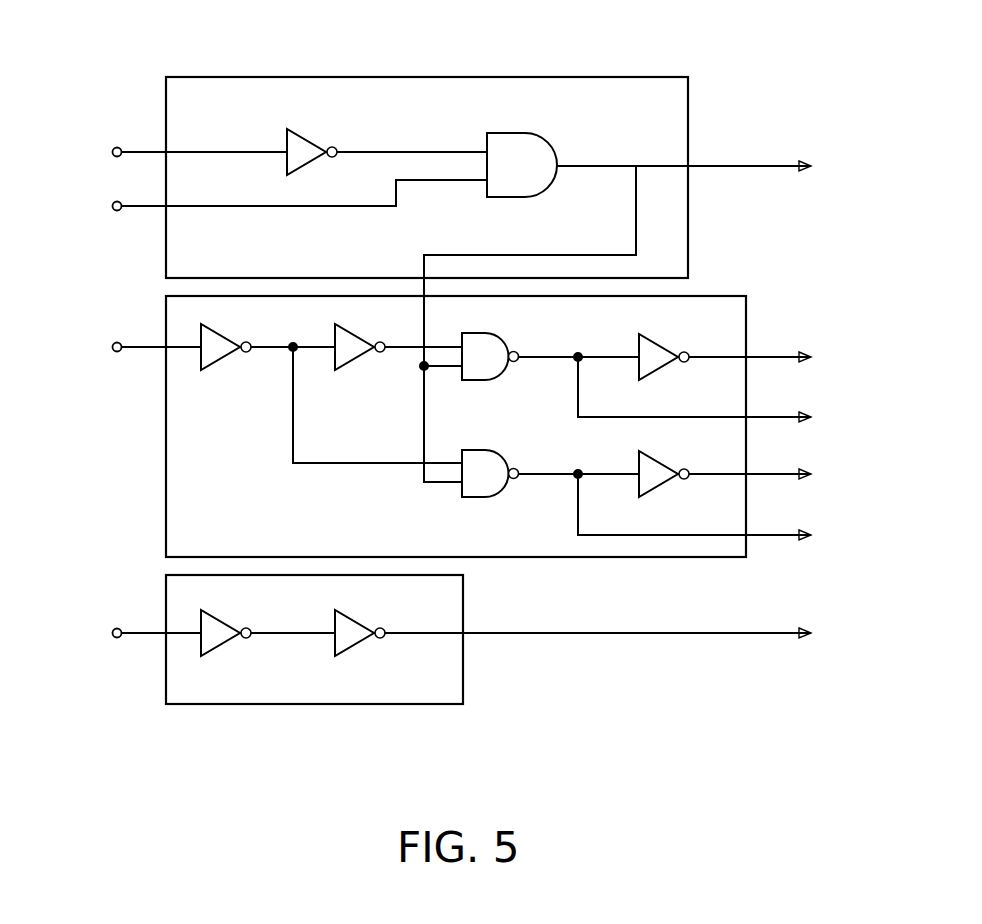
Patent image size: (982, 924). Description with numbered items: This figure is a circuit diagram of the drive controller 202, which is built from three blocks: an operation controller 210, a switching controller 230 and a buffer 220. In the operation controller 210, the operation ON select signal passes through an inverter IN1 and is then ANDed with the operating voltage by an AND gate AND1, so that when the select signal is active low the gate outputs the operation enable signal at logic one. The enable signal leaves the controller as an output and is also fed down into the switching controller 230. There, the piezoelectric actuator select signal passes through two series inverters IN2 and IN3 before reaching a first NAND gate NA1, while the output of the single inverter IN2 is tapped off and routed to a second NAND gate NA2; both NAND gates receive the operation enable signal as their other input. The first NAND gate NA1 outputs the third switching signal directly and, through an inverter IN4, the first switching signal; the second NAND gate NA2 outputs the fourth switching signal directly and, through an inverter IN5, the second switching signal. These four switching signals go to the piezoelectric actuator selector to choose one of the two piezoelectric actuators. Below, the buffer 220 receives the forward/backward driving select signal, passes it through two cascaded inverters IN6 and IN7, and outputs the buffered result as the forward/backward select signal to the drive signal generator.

The drive controller 202 is at (246, 22).
The operation controller 210 is at (545, 77).
The switching controller 230 is at (717, 297).
The buffer 220 is at (427, 704).
The inverter IN1 is at (305, 133).
The inverter IN2 is at (217, 363).
The inverter IN3 is at (350, 368).
The inverter IN4 is at (667, 365).
The inverter IN5 is at (667, 485).
The inverter IN6 is at (223, 643).
The inverter IN7 is at (355, 645).
The AND gate AND1 is at (572, 135).
The first NAND gate NA1 is at (501, 380).
The second NAND gate NA2 is at (503, 497).